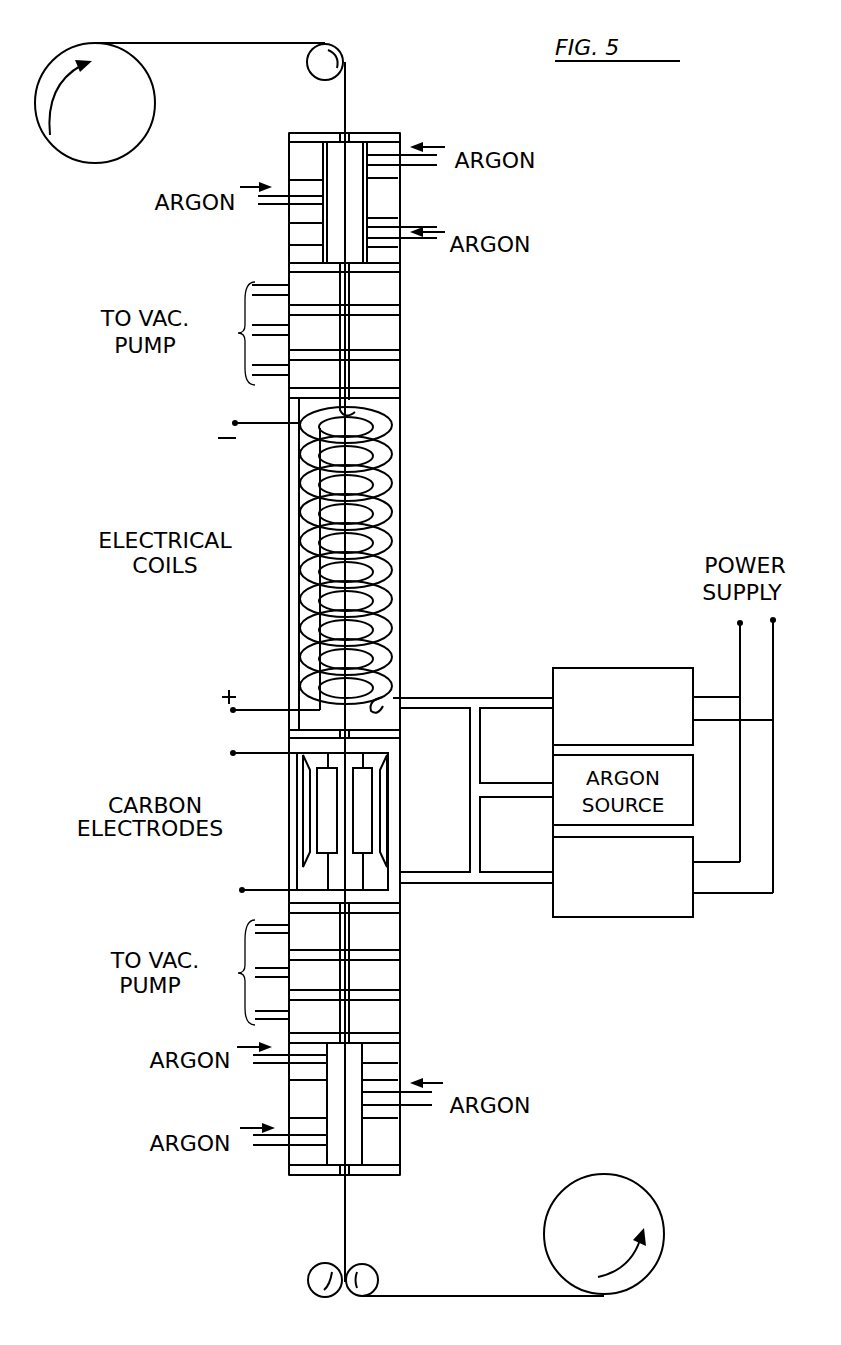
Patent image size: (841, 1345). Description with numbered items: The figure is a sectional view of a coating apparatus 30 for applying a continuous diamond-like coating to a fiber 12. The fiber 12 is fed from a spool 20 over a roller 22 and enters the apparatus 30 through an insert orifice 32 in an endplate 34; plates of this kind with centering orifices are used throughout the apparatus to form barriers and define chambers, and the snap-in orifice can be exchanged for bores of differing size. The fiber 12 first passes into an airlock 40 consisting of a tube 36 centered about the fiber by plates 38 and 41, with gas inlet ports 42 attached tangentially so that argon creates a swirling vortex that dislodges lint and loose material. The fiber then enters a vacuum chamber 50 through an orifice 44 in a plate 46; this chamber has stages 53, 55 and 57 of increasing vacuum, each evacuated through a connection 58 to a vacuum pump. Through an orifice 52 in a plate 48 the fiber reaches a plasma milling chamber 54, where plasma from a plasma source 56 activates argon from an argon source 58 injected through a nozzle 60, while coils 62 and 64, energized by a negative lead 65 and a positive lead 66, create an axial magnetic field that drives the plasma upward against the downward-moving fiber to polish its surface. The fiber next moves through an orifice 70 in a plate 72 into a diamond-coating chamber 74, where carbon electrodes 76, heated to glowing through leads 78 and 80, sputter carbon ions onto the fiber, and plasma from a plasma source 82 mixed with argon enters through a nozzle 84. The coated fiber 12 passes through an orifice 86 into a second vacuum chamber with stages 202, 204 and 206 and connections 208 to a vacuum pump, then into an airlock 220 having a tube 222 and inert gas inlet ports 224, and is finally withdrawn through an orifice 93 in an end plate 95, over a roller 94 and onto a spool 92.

The core fiber 12 is at (217, 43).
The spool 20 is at (95, 150).
The roller 22 is at (336, 48).
The coating apparatus 30 is at (550, 544).
The insert orifice 32 is at (348, 133).
The endplate 34 is at (320, 133).
The tube 36 is at (289, 246).
The plate 38 is at (400, 172).
The airlock 40 is at (475, 204).
The plate 41 is at (400, 216).
The gas inlet ports 42 is at (440, 160).
The orifice 44 is at (289, 264).
The plate 46 is at (402, 265).
The plate 48 is at (398, 388).
The vacuum chamber 50 is at (490, 352).
The orifice 52 is at (402, 410).
The vacuum stage 53 is at (398, 288).
The plasma milling chamber 54 is at (395, 521).
The vacuum stage 55 is at (398, 322).
The plasma source 56 is at (640, 668).
The vacuum stage 57 is at (398, 378).
The connection to vacuum pump 58 is at (253, 285).
The nozzle 60 is at (395, 700).
The coil 62 is at (372, 568).
The coil 64 is at (395, 597).
The lead 65 is at (232, 423).
The lead 66 is at (233, 710).
The orifice 70 is at (300, 722).
The plate 72 is at (400, 731).
The diamond-coating chamber 74 is at (289, 870).
The carbon electrodes 76 is at (302, 785).
The lead 78 is at (233, 753).
The lead 80 is at (240, 890).
The plasma source 82 is at (620, 917).
The nozzle 84 is at (400, 872).
The orifice 86 is at (385, 918).
The spool 92 is at (628, 1203).
The orifice 93 is at (352, 1207).
The roller 94 is at (308, 1273).
The end plate 95 is at (322, 1178).
The vacuum stage 202 is at (398, 948).
The vacuum stage 204 is at (398, 978).
The plate 206 is at (398, 1016).
The connections to vacuum pump 208 is at (253, 925).
The airlock 220 is at (214, 1120).
The tube 222 is at (400, 1065).
The inert gas inlet ports 224 is at (260, 1063).